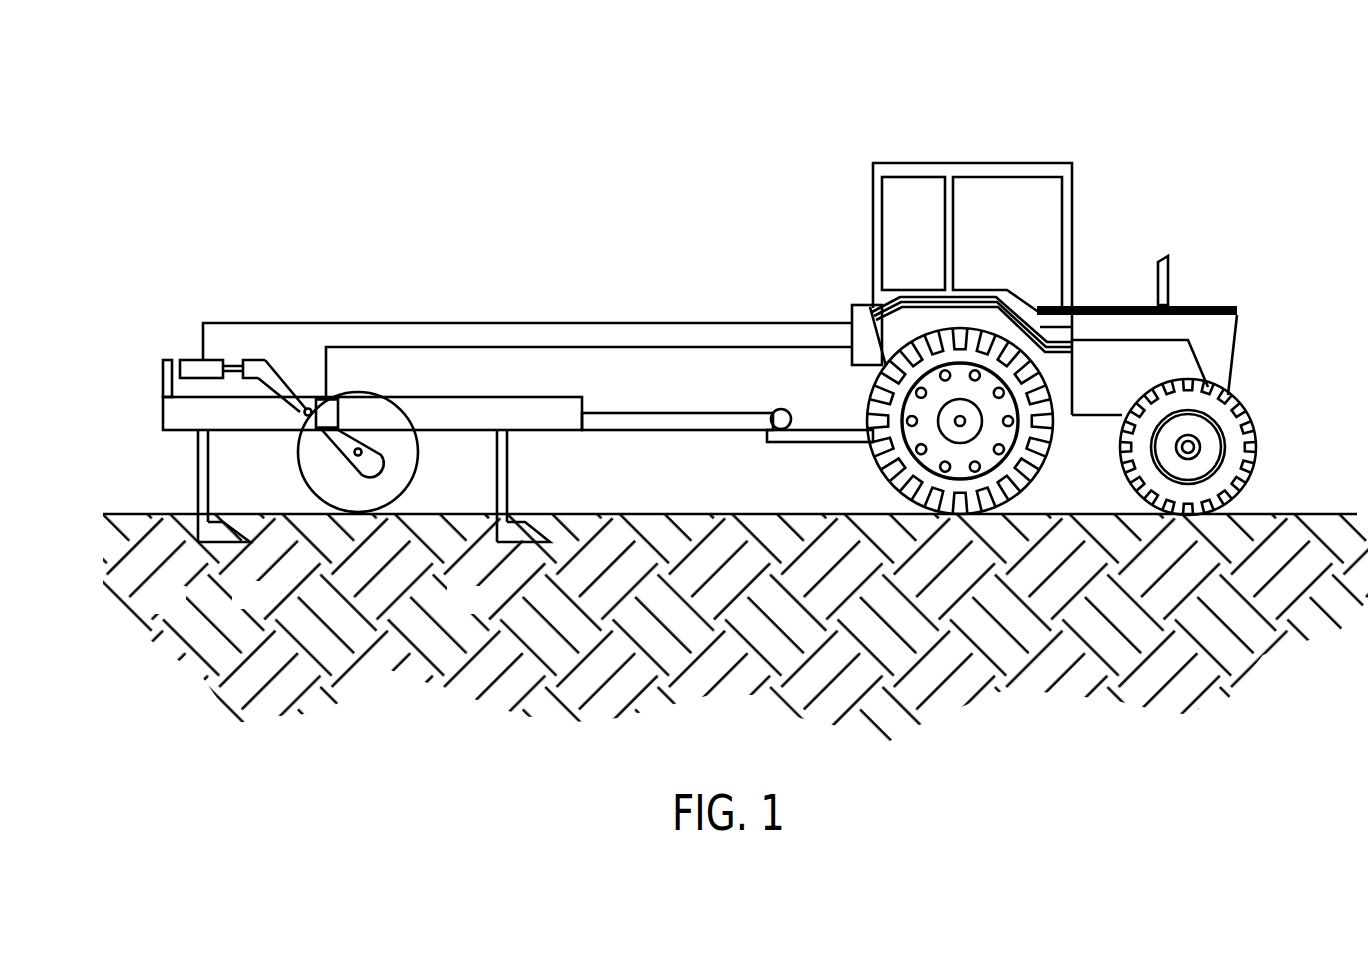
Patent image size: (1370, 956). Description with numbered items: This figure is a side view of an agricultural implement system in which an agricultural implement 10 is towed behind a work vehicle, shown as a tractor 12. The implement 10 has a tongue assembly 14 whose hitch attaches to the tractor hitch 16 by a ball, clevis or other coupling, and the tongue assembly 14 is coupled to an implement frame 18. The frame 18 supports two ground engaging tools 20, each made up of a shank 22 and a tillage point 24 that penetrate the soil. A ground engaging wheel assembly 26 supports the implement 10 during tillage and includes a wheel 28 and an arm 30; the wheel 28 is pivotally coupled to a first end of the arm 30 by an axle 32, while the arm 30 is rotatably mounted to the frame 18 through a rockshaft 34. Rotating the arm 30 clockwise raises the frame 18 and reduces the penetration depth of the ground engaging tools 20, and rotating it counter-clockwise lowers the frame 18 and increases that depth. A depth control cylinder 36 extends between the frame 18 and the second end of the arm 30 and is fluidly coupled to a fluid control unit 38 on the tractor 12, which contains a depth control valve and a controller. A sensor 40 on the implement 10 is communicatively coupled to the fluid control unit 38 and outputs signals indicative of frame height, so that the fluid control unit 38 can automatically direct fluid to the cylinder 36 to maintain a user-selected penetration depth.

The agricultural implement 10 is at (332, 297).
The tractor 12 is at (1085, 110).
The tongue assembly 14 is at (677, 413).
The tractor hitch 16 is at (817, 443).
The implement frame 18 is at (560, 431).
The ground engaging tool 20 is at (183, 552).
The shank 22 is at (197, 478).
The tillage point 24 is at (232, 546).
The ground engaging wheel assembly 26 is at (279, 445).
The wheel 28 is at (418, 466).
The arm 30 is at (342, 448).
The axle 32 is at (366, 446).
The rockshaft 34 is at (306, 408).
The depth control cylinder 36 is at (192, 359).
The fluid control unit 38 is at (867, 306).
The sensor 40 is at (349, 395).